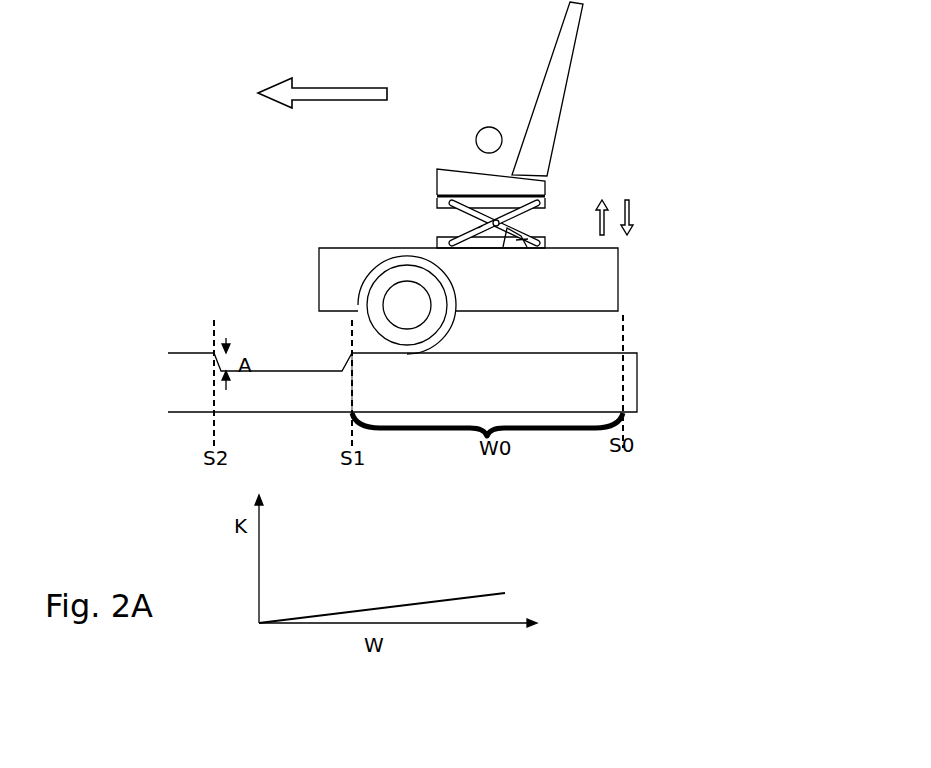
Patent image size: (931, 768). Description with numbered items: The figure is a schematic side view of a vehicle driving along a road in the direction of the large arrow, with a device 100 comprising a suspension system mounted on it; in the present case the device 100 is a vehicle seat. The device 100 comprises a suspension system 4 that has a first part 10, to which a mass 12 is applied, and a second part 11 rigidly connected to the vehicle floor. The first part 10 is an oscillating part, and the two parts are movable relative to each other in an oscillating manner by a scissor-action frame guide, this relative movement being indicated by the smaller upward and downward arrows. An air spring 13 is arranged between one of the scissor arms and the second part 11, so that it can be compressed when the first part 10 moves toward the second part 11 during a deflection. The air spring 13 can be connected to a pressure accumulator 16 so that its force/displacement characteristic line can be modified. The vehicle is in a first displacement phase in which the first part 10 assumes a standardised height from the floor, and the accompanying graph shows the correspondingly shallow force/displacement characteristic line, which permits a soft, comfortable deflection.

The device 100 is at (633, 101).
The mass 12 is at (450, 182).
The first part 10 is at (445, 203).
The second part 11 is at (440, 242).
The suspension system 4 is at (528, 240).
The air spring 13 is at (541, 244).
The pressure accumulator 16 is at (480, 232).